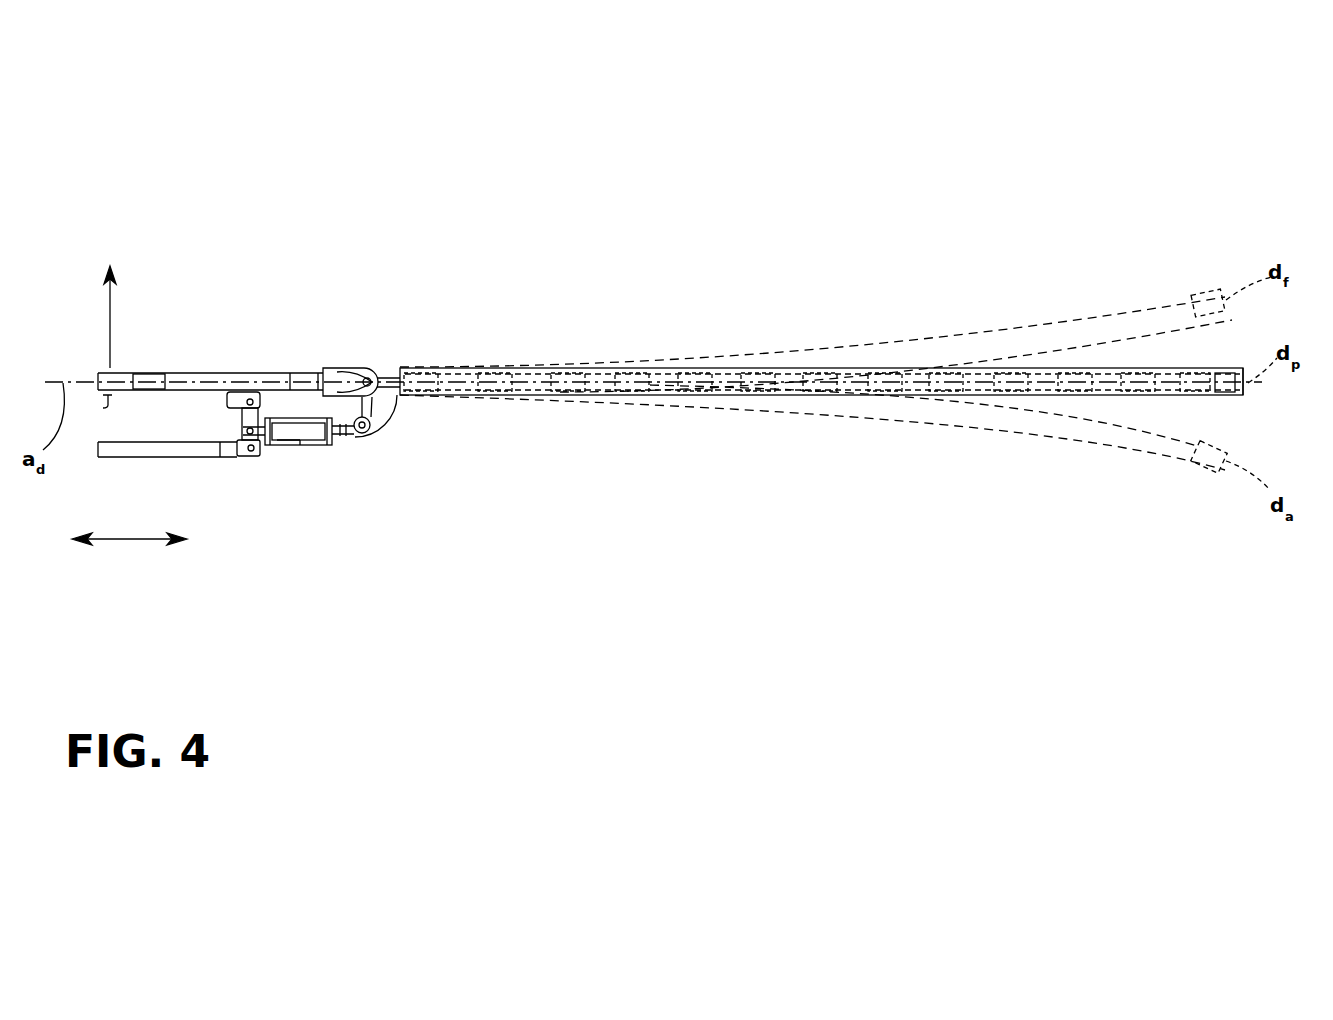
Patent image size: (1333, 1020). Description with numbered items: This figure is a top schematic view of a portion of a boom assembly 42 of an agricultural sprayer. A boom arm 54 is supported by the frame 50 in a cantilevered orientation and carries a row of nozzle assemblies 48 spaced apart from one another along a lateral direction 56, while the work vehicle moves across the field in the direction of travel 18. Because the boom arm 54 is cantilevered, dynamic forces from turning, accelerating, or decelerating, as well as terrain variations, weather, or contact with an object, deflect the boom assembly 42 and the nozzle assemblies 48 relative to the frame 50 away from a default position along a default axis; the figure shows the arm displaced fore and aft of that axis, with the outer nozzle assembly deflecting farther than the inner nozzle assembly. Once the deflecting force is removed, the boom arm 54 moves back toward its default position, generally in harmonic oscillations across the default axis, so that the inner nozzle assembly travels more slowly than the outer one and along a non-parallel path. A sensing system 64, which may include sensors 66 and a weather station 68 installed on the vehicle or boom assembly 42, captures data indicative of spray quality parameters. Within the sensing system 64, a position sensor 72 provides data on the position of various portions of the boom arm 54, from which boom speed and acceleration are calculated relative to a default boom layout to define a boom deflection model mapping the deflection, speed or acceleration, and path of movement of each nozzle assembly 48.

The direction of travel 18 is at (112, 304).
The boom assembly 42 is at (655, 258).
The nozzle assemblies 48 is at (1220, 197).
The frame 50 is at (207, 372).
The second boom arm 54 is at (1243, 354).
The lateral direction 56 is at (122, 540).
The sensing system 64 is at (347, 318).
The sensors 66 is at (424, 284).
The weather station 68 is at (153, 372).
The position sensor 72 is at (303, 372).